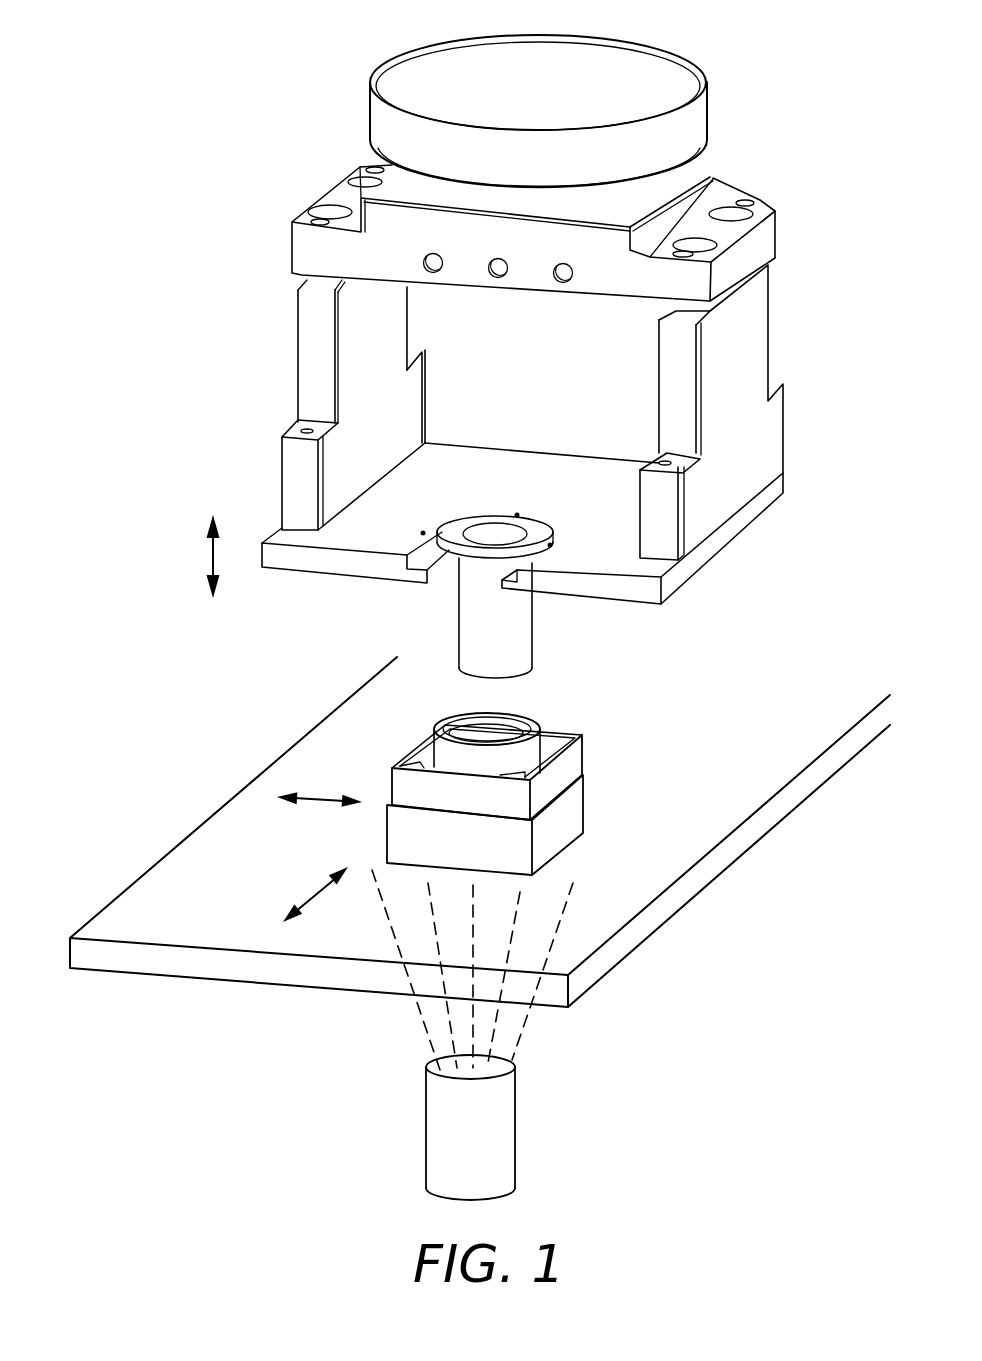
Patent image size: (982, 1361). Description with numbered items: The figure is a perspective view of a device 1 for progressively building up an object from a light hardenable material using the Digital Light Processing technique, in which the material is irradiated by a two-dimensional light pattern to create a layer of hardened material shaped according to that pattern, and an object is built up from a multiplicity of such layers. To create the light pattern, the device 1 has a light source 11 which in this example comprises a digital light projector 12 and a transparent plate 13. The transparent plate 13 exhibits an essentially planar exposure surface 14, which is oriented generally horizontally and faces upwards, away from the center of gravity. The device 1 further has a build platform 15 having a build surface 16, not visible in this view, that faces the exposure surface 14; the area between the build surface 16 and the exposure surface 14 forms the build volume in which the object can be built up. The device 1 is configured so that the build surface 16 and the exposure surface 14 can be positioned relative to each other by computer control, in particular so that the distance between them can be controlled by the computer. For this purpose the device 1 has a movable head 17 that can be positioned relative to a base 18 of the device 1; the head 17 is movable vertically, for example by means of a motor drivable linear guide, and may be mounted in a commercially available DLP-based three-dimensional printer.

The device 1 is at (234, 60).
The light source 11 is at (158, 798).
The digital light projector 12 is at (497, 1113).
The transparent plate 13 is at (727, 853).
The exposure surface 14 is at (638, 883).
The build platform 15 is at (532, 637).
The build surface 16 is at (527, 686).
The movable head 17 is at (571, 369).
The base 18 is at (480, 928).